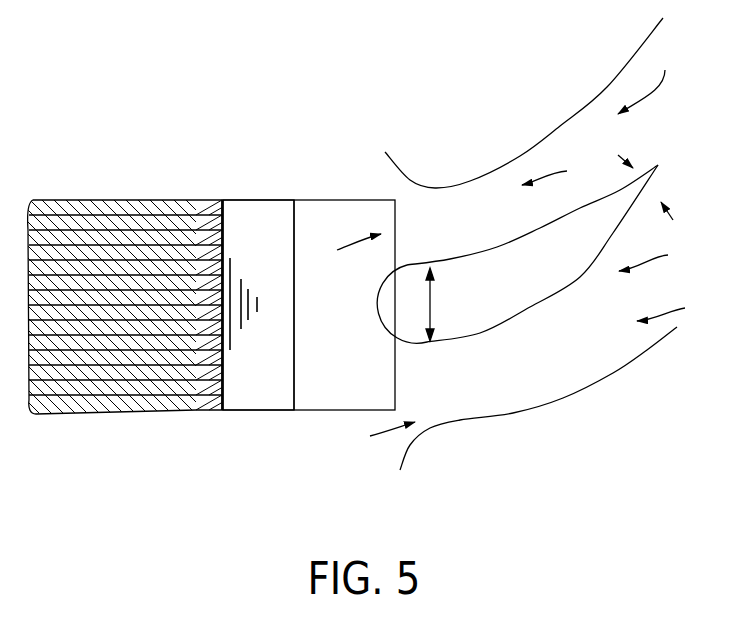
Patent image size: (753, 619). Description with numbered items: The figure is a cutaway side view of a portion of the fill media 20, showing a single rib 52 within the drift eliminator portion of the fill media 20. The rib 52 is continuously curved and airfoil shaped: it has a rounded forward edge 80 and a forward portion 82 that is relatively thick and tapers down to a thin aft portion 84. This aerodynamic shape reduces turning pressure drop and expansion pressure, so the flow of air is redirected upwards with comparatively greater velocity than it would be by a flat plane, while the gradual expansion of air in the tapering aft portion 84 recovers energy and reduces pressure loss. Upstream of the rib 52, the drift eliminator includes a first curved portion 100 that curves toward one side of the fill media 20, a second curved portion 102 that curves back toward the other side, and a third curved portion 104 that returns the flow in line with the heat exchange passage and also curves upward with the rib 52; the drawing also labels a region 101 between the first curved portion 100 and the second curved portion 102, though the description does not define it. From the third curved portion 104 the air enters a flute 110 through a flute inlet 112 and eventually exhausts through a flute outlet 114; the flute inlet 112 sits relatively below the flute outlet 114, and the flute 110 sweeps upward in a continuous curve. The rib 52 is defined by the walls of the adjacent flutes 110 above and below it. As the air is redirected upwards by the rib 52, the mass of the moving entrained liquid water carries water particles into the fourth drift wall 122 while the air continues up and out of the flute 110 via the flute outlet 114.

The fill media 20 is at (118, 189).
The rib 52 is at (500, 244).
The rounded forward edge 80 is at (491, 254).
The forward portion 82 is at (433, 305).
The aft portion 84 is at (672, 207).
The first curved portion 100 is at (223, 412).
The acoustic treatment section 101 is at (270, 200).
The second curved portion 102 is at (295, 412).
The third curved portion 104 is at (399, 375).
The flute 110 is at (618, 239).
The flute inlet 112 is at (352, 343).
The flute outlet 114 is at (658, 156).
The fourth drift wall 122 is at (497, 248).